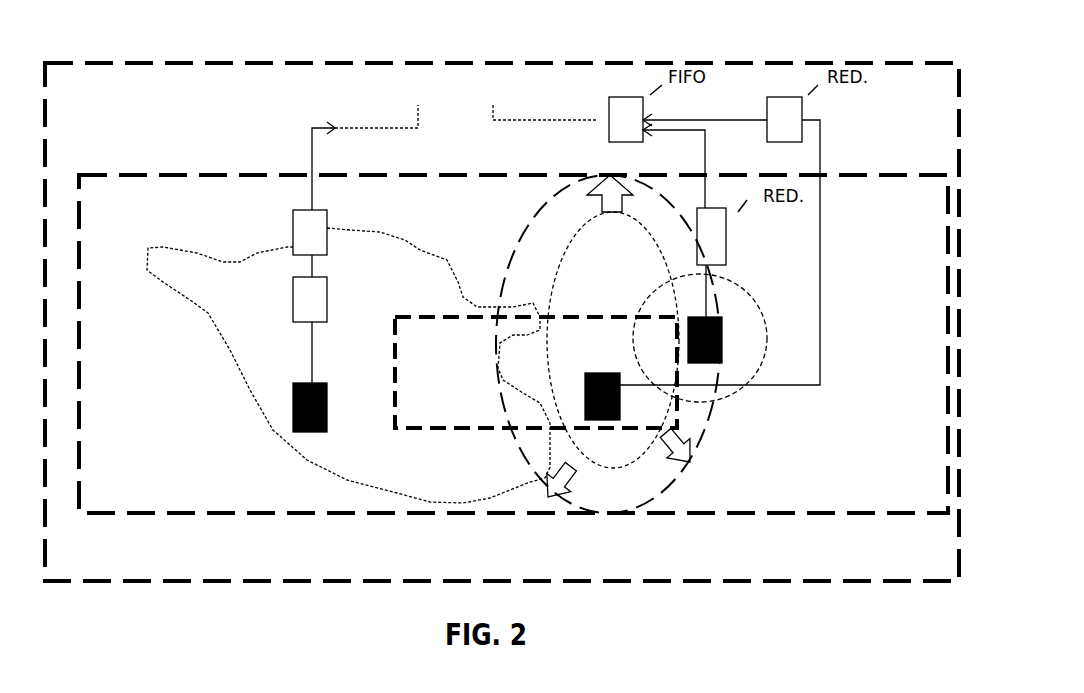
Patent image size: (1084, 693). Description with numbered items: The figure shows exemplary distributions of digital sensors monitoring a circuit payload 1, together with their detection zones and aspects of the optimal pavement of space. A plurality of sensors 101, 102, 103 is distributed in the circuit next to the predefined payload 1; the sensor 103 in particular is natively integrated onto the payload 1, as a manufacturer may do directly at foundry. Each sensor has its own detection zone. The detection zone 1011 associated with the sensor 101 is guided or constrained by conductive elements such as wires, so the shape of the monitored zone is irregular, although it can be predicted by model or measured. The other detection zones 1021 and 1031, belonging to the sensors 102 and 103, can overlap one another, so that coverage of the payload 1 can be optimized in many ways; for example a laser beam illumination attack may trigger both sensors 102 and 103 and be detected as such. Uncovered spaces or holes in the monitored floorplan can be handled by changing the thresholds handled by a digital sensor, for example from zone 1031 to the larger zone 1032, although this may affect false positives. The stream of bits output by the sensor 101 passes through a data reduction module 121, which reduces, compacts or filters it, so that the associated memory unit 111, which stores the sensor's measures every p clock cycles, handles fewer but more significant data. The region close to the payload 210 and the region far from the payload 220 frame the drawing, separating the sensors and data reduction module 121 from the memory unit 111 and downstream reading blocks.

The far-from-payload zone 220 is at (80, 51).
The close-to-payload zone 210 is at (100, 168).
The memory unit 111 is at (333, 207).
The data reduction module 121 is at (333, 277).
The sensor 101 is at (328, 388).
The detection zone 1011 is at (423, 255).
The circuit payload 1 is at (422, 433).
The sensor 103 is at (587, 373).
The sensor 102 is at (717, 317).
The detection zone 1021 is at (722, 402).
The detection zone 1031 is at (622, 468).
The detection zone 1032 is at (608, 360).